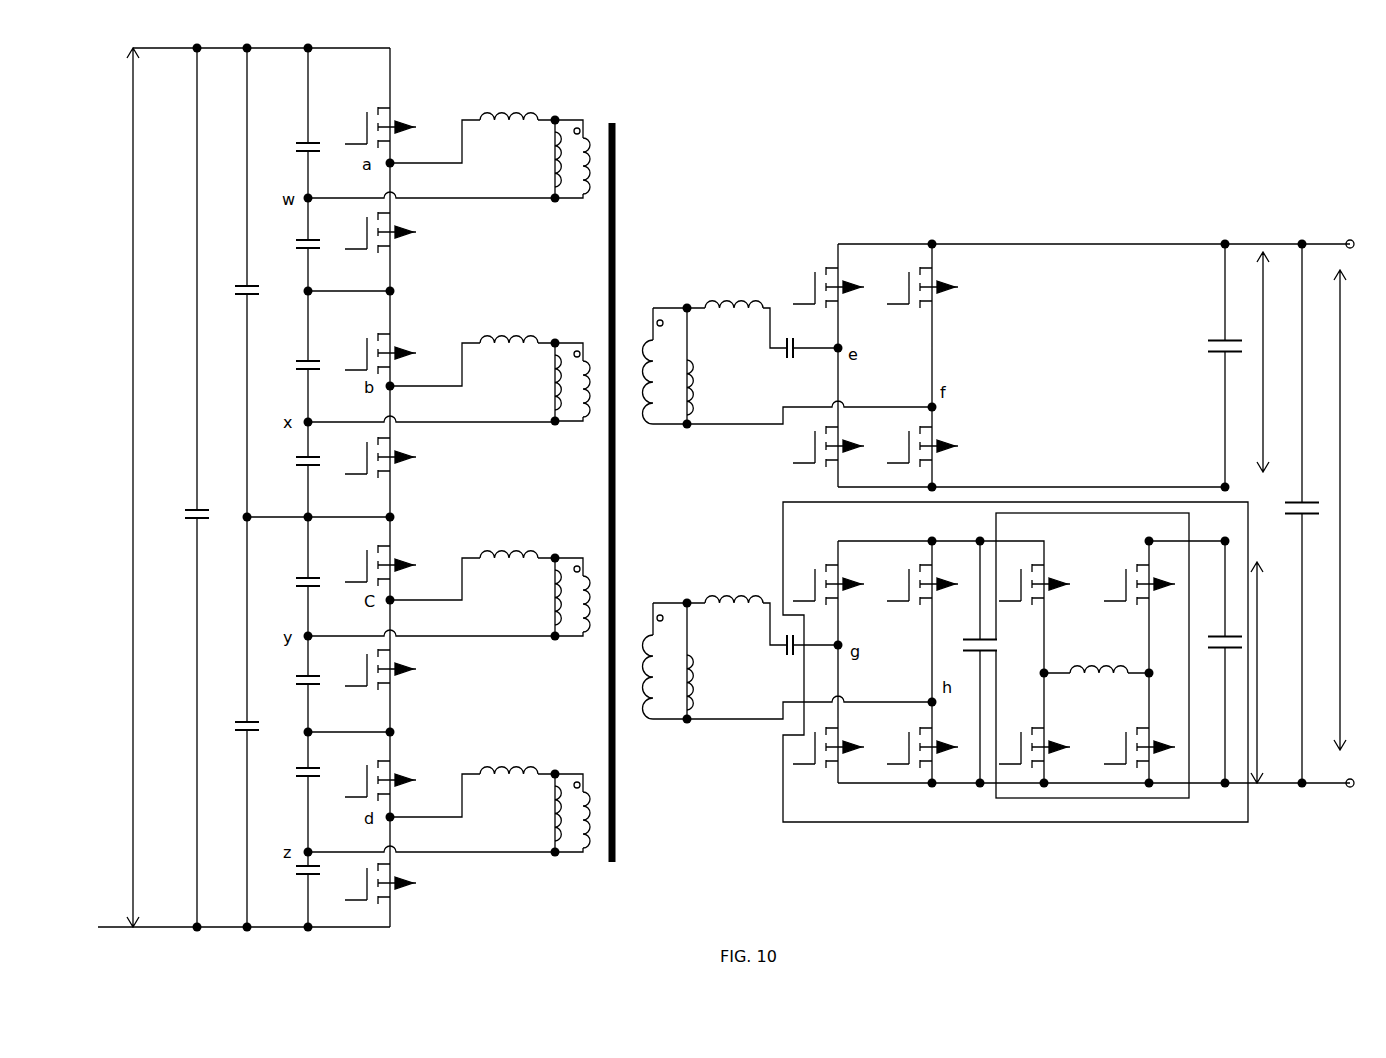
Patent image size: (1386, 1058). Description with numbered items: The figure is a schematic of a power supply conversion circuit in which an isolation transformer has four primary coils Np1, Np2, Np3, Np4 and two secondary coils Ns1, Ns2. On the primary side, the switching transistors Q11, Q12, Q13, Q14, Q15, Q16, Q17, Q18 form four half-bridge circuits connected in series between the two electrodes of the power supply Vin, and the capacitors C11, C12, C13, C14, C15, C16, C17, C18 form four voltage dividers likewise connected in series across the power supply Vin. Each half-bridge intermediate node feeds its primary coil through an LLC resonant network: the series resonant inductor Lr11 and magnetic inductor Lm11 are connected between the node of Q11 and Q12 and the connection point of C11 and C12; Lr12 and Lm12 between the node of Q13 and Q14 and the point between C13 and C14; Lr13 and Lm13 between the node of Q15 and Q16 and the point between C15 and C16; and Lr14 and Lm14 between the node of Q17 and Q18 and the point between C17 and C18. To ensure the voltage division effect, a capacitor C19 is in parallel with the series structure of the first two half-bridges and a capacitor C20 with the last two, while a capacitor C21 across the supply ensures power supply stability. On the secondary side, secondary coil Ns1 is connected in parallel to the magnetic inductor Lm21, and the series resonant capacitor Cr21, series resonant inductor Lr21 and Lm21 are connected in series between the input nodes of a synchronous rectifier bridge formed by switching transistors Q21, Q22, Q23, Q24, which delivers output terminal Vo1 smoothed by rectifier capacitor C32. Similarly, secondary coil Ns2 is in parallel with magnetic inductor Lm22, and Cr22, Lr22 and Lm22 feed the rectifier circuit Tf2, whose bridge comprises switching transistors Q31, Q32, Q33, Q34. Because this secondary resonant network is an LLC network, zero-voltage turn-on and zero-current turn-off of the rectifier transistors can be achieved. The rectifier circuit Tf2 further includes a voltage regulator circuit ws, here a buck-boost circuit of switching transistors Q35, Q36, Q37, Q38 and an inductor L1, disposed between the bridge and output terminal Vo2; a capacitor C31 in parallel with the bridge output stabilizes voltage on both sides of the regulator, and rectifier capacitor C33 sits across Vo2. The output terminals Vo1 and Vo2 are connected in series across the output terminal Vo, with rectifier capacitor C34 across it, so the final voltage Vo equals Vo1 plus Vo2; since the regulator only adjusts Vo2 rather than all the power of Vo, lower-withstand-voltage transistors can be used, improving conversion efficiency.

The power supply Vin is at (118, 487).
The capacitor C11 is at (295, 158).
The capacitor C12 is at (295, 257).
The capacitor C13 is at (295, 377).
The capacitor C14 is at (295, 474).
The capacitor C15 is at (295, 595).
The capacitor C16 is at (295, 693).
The capacitor C17 is at (295, 784).
The capacitor C18 is at (295, 881).
The capacitor C19 is at (233, 302).
The capacitor C20 is at (233, 739).
The capacitor C21 is at (181, 526).
The switching transistor Q11 is at (372, 127).
The switching transistor Q12 is at (372, 232).
The switching transistor Q13 is at (372, 353).
The switching transistor Q14 is at (372, 457).
The switching transistor Q15 is at (372, 565).
The switching transistor Q16 is at (372, 669).
The switching transistor Q17 is at (372, 780).
The switching transistor Q18 is at (372, 883).
The series resonant inductor Lr11 is at (509, 109).
The series resonant inductor Lr12 is at (509, 332).
The series resonant inductor Lr13 is at (509, 547).
The series resonant inductor Lr14 is at (509, 763).
The magnetic inductor Lm11 is at (532, 159).
The magnetic inductor Lm12 is at (532, 382).
The magnetic inductor Lm13 is at (532, 597).
The magnetic inductor Lm14 is at (532, 813).
The primary coil Np1 is at (589, 177).
The primary coil Np2 is at (589, 400).
The primary coil Np3 is at (589, 615).
The primary coil Np4 is at (589, 831).
The secondary coil Ns1 is at (650, 398).
The secondary coil Ns2 is at (650, 693).
The series resonant inductor Lr21 is at (734, 292).
The series resonant inductor Lr22 is at (734, 587).
The magnetic inductor Lm21 is at (717, 387).
The magnetic inductor Lm22 is at (717, 682).
The series resonant capacitor Cr21 is at (797, 360).
The series resonant capacitor Cr22 is at (781, 657).
The switching transistor Q21 is at (836, 298).
The switching transistor Q22 is at (839, 444).
The switching transistor Q23 is at (930, 298).
The switching transistor Q24 is at (929, 444).
The switching transistor Q31 is at (835, 590).
The switching transistor Q32 is at (839, 744).
The switching transistor Q33 is at (930, 590).
The switching transistor Q34 is at (930, 744).
The switching transistor Q35 is at (1041, 590).
The switching transistor Q36 is at (1044, 744).
The switching transistor Q37 is at (1146, 590).
The switching transistor Q38 is at (1146, 744).
The capacitor C31 is at (989, 662).
The rectifier capacitor C32 is at (1210, 365).
The rectifier capacitor C33 is at (1218, 662).
The rectifier capacitor C34 is at (1311, 513).
The inductor L1 is at (1099, 659).
The rectifier circuit Tf2 is at (905, 822).
The voltage regulator circuit ws is at (1085, 798).
The output terminal Vo1 is at (1249, 362).
The output terminal Vo2 is at (1274, 672).
The output terminal Vo is at (1352, 510).